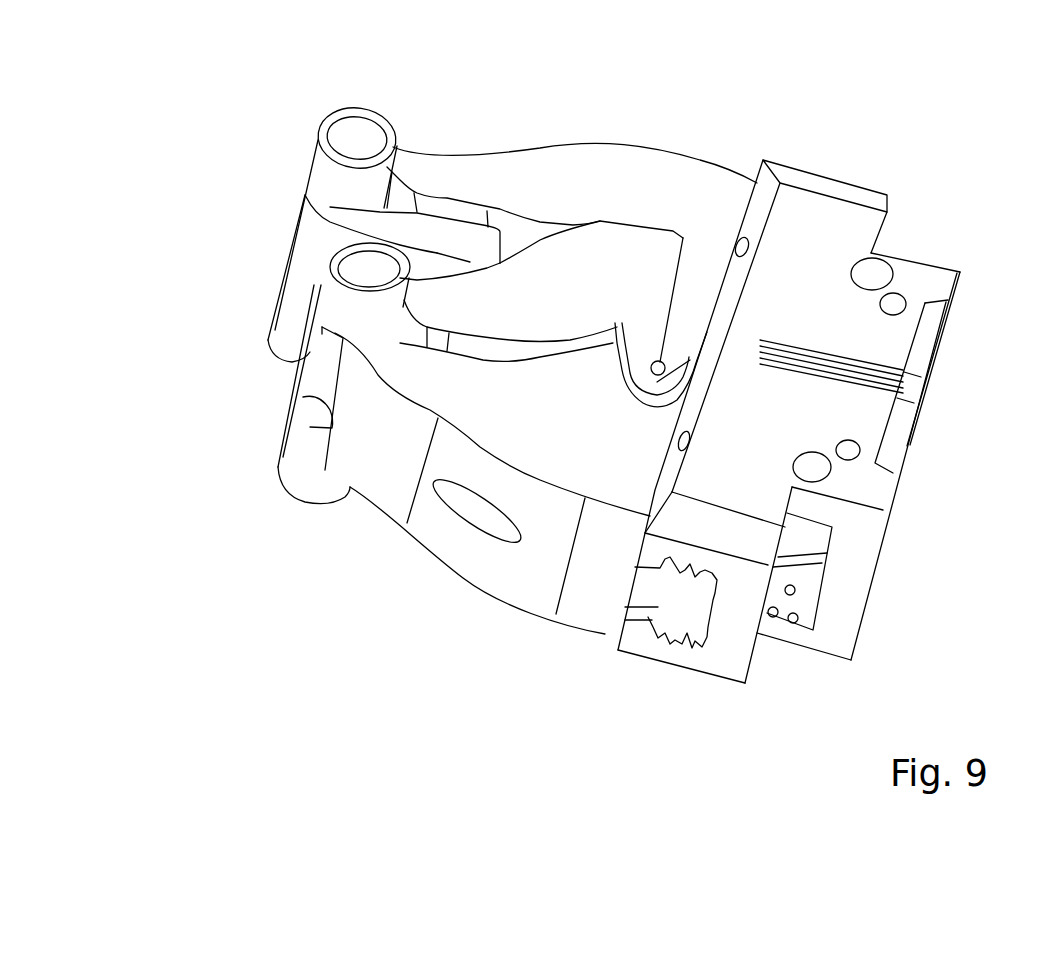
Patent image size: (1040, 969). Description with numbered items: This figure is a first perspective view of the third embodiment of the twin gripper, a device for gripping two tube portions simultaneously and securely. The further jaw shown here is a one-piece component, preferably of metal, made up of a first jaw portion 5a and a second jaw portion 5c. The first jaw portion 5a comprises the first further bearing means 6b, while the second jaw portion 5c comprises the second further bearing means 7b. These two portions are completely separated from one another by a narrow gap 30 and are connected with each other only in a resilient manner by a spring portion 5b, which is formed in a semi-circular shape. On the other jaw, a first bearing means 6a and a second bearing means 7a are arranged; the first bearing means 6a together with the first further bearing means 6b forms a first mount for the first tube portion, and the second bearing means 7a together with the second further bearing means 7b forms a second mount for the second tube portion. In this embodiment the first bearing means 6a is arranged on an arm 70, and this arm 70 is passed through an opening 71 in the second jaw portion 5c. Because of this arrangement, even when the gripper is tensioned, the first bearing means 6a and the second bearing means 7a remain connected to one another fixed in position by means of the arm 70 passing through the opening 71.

The first jaw portion 5a is at (600, 185).
The spring portion 5b is at (883, 250).
The second jaw portion 5c is at (492, 310).
The first bearing means 6a is at (330, 197).
The first further bearing means 6b is at (389, 169).
The second bearing means 7a is at (345, 340).
The second further bearing means 7b is at (402, 247).
The narrow gap 30 is at (605, 368).
The arm 70 is at (683, 237).
The opening 71 is at (546, 377).